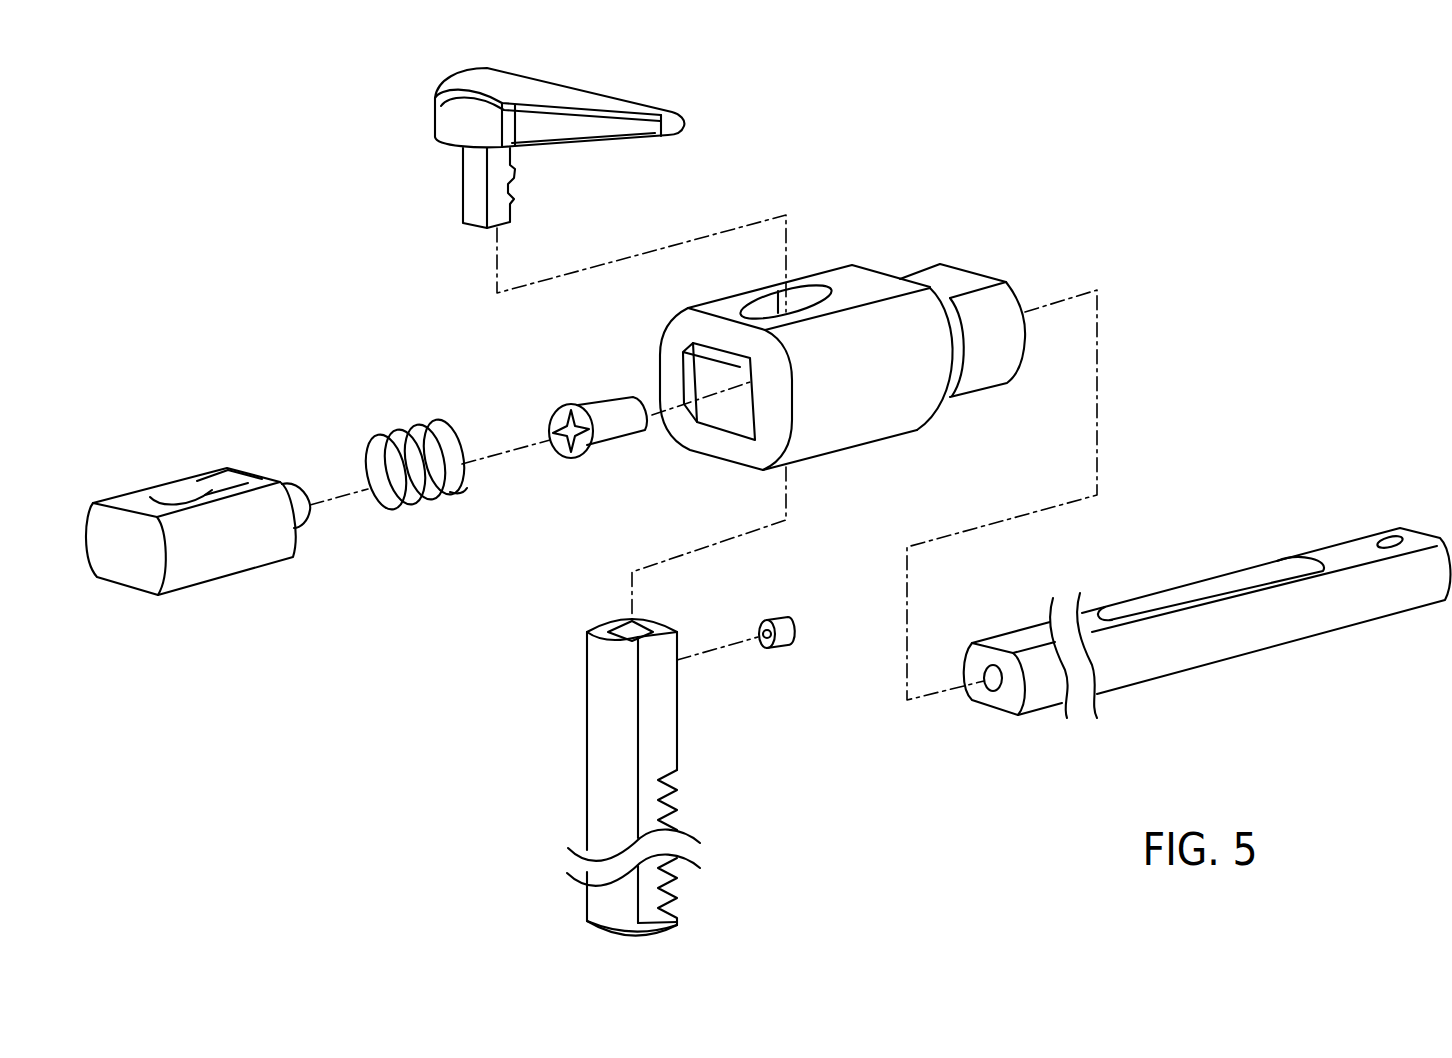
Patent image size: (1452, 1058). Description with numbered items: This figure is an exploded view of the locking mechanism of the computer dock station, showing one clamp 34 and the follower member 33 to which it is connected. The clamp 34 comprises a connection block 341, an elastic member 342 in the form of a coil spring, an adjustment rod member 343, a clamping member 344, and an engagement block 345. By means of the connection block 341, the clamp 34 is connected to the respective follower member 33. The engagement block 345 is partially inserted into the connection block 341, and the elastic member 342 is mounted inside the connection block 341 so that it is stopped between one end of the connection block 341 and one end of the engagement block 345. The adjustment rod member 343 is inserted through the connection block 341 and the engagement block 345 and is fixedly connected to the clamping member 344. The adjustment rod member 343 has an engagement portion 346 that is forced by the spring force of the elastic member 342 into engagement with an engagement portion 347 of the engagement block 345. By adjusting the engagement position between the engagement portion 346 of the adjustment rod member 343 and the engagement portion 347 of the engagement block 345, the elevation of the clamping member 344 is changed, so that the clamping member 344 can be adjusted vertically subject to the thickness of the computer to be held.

The clamp 34 is at (216, 185).
The follower member 33 is at (1240, 572).
The connection block 341 is at (918, 269).
The elastic member 342 is at (408, 433).
The adjustment rod member 343 is at (587, 745).
The clamping member 344 is at (435, 117).
The engagement block 345 is at (227, 577).
The engagement portion 346 is at (672, 800).
The engagement portion 347 is at (197, 480).